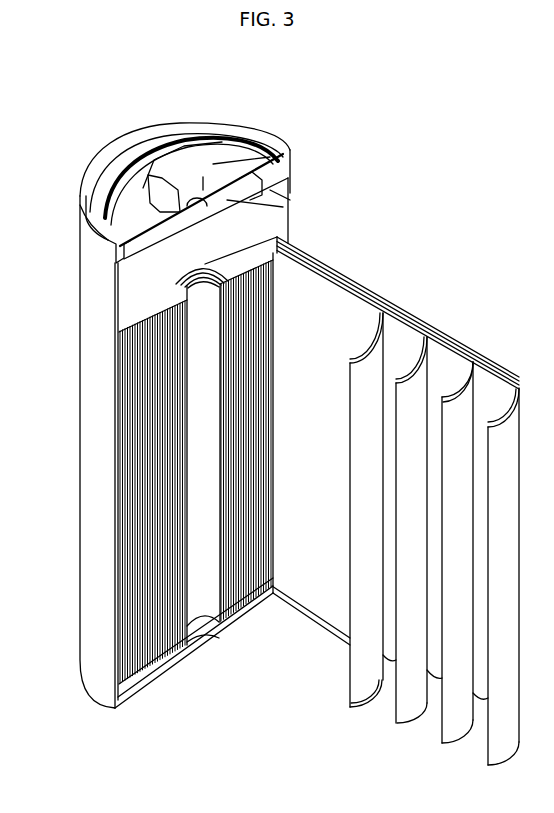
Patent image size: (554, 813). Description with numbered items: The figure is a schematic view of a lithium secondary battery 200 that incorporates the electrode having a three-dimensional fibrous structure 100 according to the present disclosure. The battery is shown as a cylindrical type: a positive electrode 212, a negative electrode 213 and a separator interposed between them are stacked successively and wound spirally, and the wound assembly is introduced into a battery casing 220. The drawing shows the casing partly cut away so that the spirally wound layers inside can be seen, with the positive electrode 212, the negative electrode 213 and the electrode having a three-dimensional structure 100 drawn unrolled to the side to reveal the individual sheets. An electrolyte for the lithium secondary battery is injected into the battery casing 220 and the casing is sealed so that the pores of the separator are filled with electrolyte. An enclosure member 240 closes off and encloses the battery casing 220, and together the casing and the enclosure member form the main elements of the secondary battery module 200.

The lithium secondary battery 200 is at (398, 90).
The enclosure member 240 is at (244, 150).
The battery casing 220 is at (90, 384).
The negative electrode 213 is at (360, 686).
The electrode having three-dimensional structure 100 is at (427, 703).
The positive electrode 212 is at (486, 740).